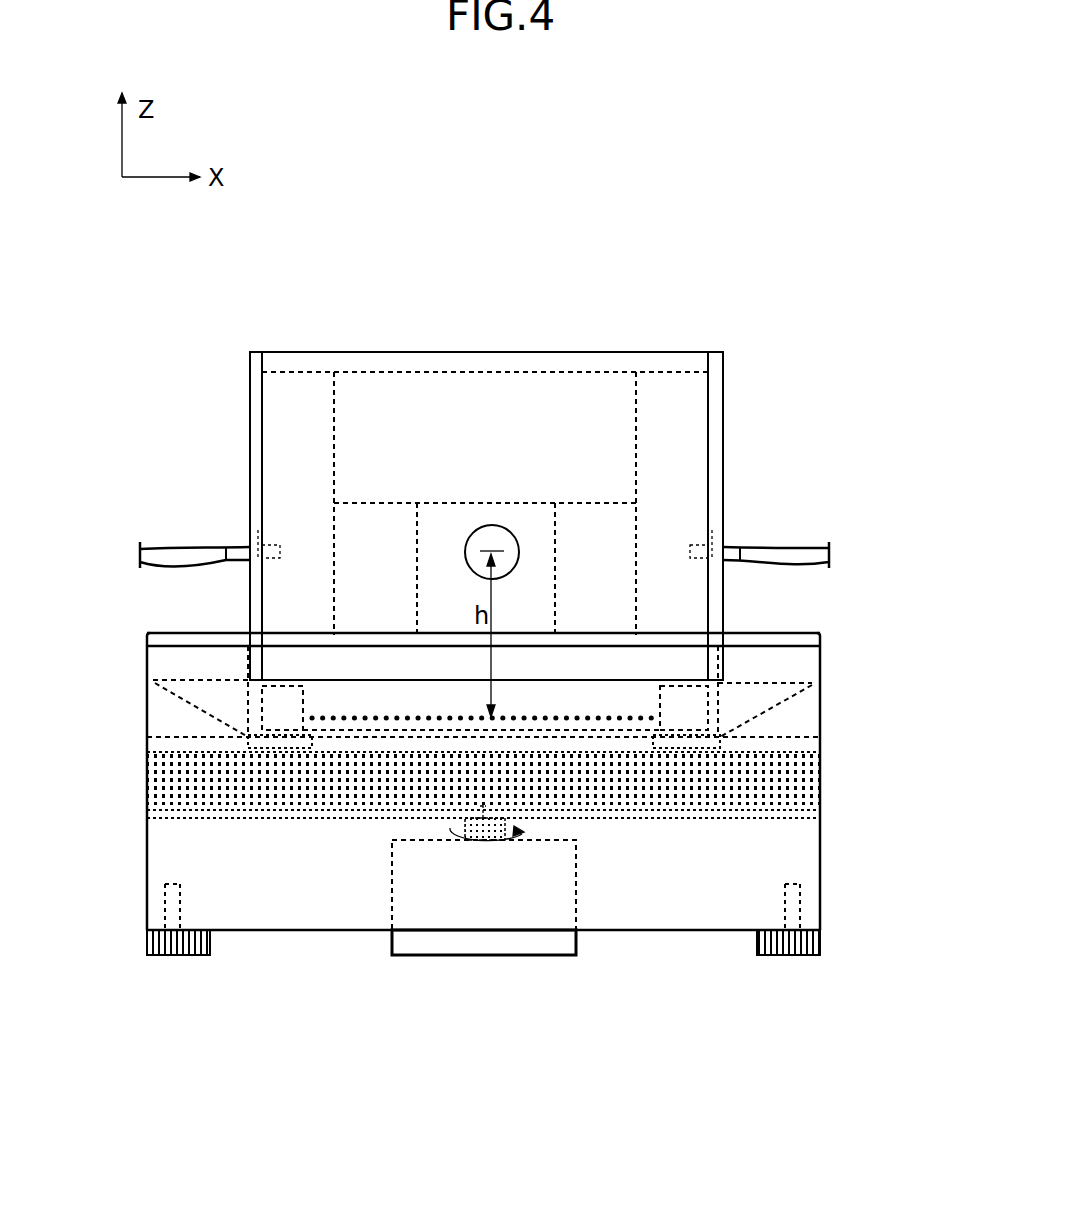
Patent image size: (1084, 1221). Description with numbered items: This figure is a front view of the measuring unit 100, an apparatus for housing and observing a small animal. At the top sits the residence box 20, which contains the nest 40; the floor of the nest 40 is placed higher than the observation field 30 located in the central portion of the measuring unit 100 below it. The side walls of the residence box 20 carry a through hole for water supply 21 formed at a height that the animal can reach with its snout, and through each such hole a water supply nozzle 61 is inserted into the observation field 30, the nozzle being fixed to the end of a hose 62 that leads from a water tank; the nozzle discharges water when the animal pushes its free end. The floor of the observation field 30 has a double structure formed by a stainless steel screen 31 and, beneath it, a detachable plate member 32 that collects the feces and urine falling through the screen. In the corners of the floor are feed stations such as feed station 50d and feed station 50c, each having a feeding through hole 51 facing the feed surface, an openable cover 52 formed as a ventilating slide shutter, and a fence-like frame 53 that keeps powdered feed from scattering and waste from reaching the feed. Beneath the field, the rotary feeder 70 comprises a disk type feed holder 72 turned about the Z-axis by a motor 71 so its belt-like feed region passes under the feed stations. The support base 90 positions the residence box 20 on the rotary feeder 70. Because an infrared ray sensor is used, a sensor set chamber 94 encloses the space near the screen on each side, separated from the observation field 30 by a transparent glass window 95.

The measuring unit 100 is at (670, 278).
The residence box 20 is at (743, 354).
The nest 40 is at (372, 380).
The through hole for water supply 21 is at (482, 526).
The observation field 30 is at (570, 670).
The stainless steel screen 31 is at (368, 732).
The detachable plate member 32 is at (605, 733).
The feed station 50c is at (688, 700).
The feed station 50d is at (289, 700).
The feeding through hole 51 is at (292, 722).
The openable cover 52 is at (296, 742).
The fence-like frame 53 is at (308, 700).
The water supply nozzle 61 is at (232, 547).
The hose 62 is at (158, 556).
The rotary feeder 70 is at (630, 1027).
The motor 71 is at (484, 955).
The disk type feed holder 72 is at (612, 808).
The support base 90 is at (821, 897).
The sensor set chamber 94 is at (158, 662).
The transparent glass window 95 is at (252, 692).